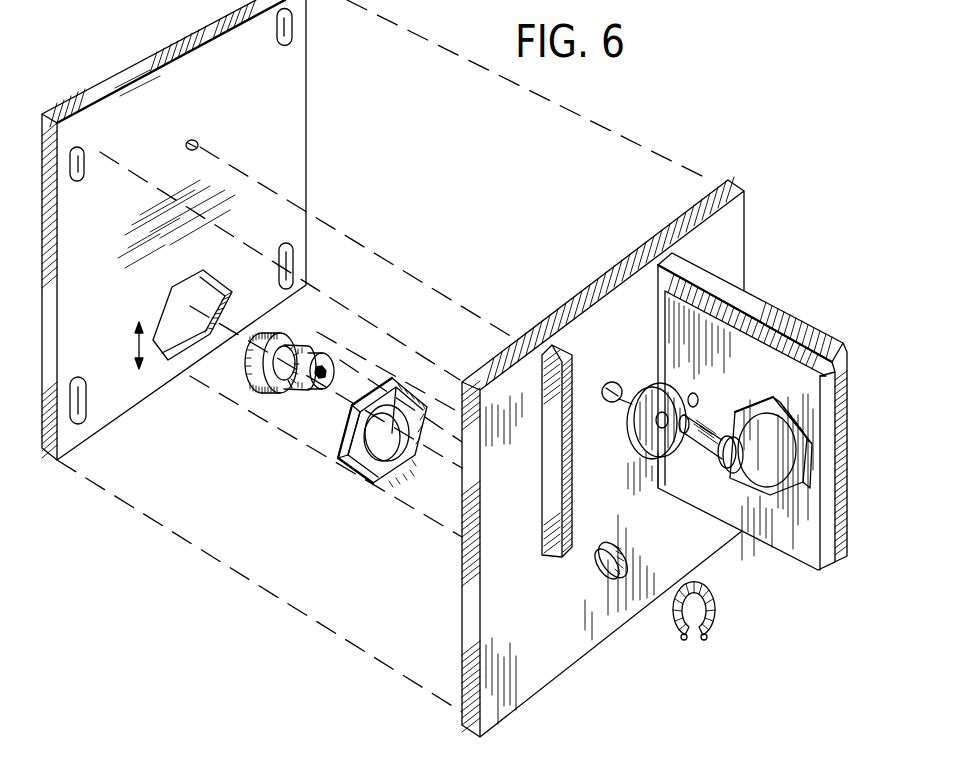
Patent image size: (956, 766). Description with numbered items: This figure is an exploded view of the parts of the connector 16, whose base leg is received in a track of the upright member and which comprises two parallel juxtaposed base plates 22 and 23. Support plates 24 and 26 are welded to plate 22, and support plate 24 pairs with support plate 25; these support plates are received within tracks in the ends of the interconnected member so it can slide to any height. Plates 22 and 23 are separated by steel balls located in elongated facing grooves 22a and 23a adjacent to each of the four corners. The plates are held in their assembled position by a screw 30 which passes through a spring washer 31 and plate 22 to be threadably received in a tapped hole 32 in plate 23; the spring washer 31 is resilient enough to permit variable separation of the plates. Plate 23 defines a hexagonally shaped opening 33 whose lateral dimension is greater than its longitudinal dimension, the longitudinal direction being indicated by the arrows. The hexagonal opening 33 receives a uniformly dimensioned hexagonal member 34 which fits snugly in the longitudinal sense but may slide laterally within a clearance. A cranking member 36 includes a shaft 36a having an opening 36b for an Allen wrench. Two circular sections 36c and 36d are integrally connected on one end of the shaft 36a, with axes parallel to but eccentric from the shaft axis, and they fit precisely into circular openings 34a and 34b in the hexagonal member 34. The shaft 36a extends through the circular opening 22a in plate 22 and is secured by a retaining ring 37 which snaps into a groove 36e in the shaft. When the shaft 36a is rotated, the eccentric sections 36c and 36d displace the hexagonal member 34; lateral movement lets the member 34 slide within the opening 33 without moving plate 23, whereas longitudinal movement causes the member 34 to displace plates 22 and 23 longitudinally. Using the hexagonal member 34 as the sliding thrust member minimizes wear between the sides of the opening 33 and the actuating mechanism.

The connector 16 is at (256, 590).
The base plate 22 is at (740, 255).
The circular opening 22a is at (602, 572).
The base plate 23 is at (128, 60).
The elongated facing grooves 23a is at (84, 162).
The support plate 24 is at (788, 326).
The support plate 25 is at (742, 326).
The support plate 26 is at (546, 487).
The screw 30 is at (731, 471).
The spring washer 31 is at (652, 456).
The tapped hole 32 is at (197, 139).
The hexagonally shaped opening 33 is at (172, 297).
The hexagonal member 34 is at (352, 446).
The circular opening 34a is at (375, 450).
The circular opening 34b is at (322, 463).
The cranking member 36 is at (298, 374).
The shaft 36a is at (320, 369).
The opening 36b is at (333, 376).
The circular section 36c is at (292, 388).
The circular section 36d is at (250, 362).
The groove 36e is at (290, 380).
The retaining ring 37 is at (713, 596).